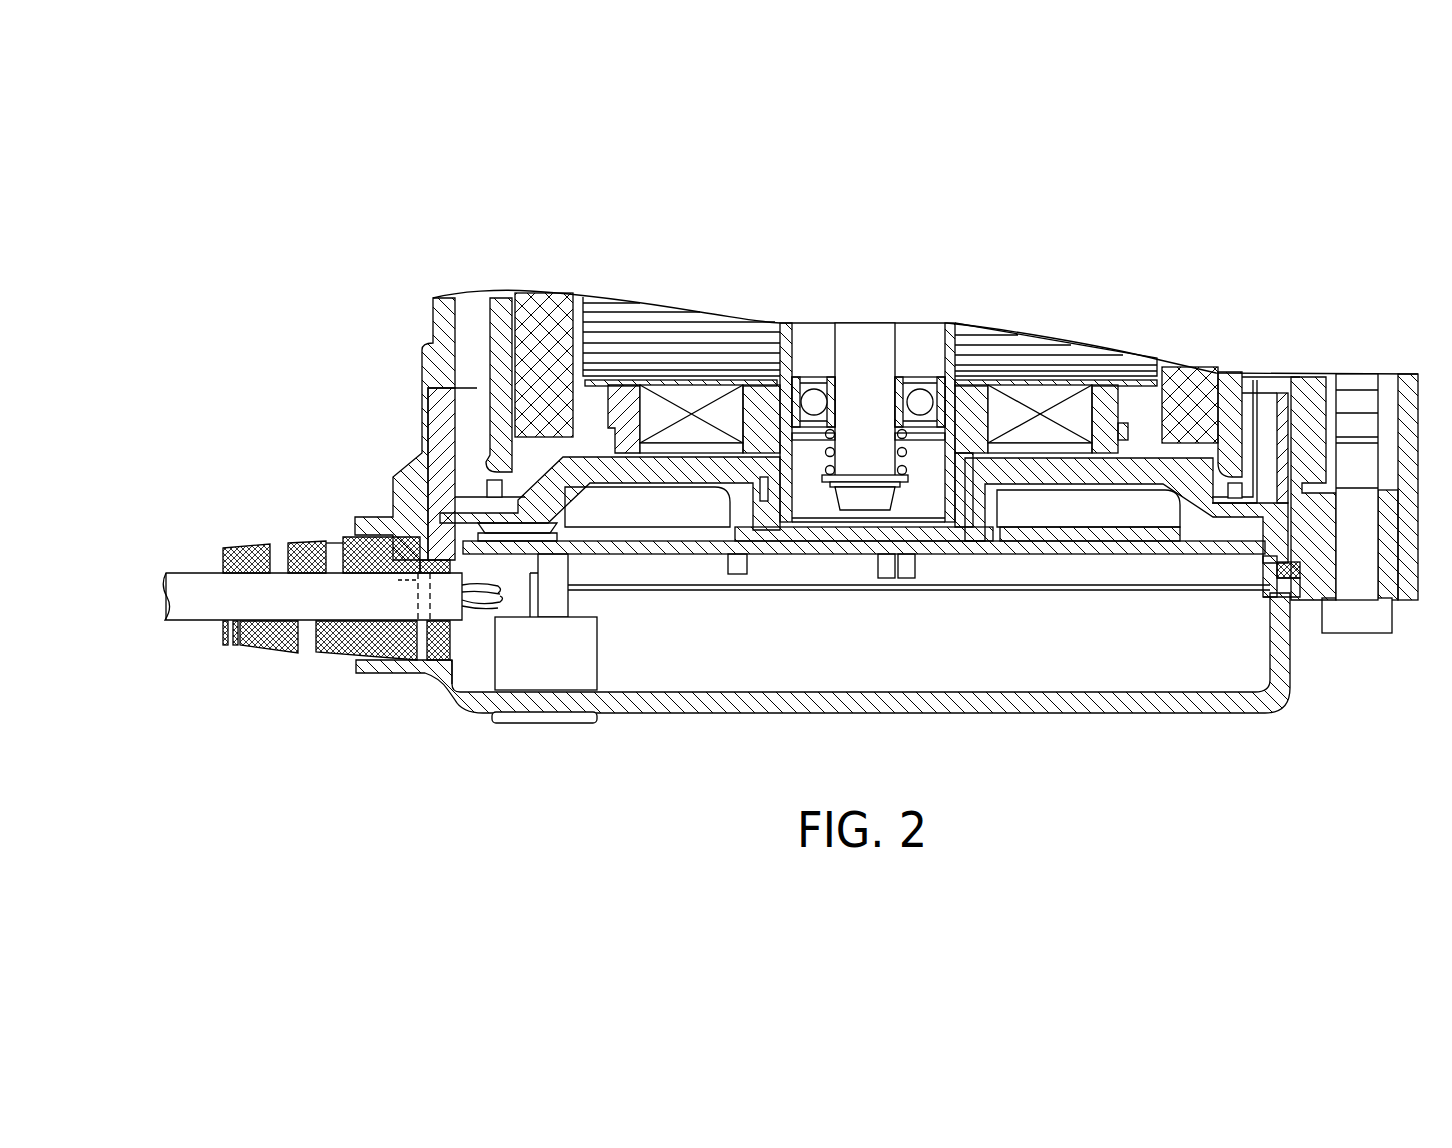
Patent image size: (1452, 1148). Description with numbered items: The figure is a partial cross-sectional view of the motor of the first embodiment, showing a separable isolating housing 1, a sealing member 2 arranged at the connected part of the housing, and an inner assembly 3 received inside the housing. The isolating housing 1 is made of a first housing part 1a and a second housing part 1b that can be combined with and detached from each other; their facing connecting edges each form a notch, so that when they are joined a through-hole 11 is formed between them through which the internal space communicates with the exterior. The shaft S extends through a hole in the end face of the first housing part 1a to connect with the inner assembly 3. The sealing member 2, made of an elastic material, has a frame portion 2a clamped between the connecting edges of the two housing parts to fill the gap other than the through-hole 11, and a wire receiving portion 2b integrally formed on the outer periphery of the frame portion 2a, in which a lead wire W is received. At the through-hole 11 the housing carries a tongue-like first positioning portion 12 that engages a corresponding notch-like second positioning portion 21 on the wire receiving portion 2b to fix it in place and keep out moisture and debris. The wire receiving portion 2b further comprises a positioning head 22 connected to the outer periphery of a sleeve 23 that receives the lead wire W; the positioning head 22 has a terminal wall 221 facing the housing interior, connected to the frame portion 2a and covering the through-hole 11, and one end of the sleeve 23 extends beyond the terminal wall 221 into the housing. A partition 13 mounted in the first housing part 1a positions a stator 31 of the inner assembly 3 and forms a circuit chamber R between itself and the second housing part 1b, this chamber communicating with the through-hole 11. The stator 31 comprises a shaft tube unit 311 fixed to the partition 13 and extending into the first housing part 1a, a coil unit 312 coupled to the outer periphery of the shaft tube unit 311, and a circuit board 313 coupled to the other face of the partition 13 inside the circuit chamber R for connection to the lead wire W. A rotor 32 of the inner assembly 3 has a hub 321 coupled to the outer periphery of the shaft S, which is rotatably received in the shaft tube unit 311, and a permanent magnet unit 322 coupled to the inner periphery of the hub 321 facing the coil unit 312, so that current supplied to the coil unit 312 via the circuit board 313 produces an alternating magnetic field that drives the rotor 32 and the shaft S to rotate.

The isolating housing 1 is at (1302, 277).
The first housing part 1a is at (1305, 376).
The second housing part 1b is at (1320, 525).
The sealing member 2 is at (235, 515).
The frame portion 2a is at (1293, 600).
The wire receiving portion 2b is at (163, 725).
The inner assembly 3 is at (718, 265).
The through-hole 11 is at (343, 548).
The first positioning portion 12 is at (376, 652).
The partition 13 is at (1072, 478).
The second positioning portion 21 is at (420, 553).
The positioning head 22 is at (270, 650).
The sleeve 23 is at (200, 622).
The terminal wall 221 is at (452, 664).
The stator 31 is at (990, 243).
The shaft tube unit 311 is at (945, 350).
The coil unit 312 is at (1043, 403).
The circuit board 313 is at (1135, 550).
The rotor 32 is at (515, 195).
The hub 321 is at (500, 305).
The permanent magnet unit 322 is at (550, 302).
The circuit chamber R is at (692, 688).
The shaft S is at (862, 342).
The lead wire W is at (482, 604).